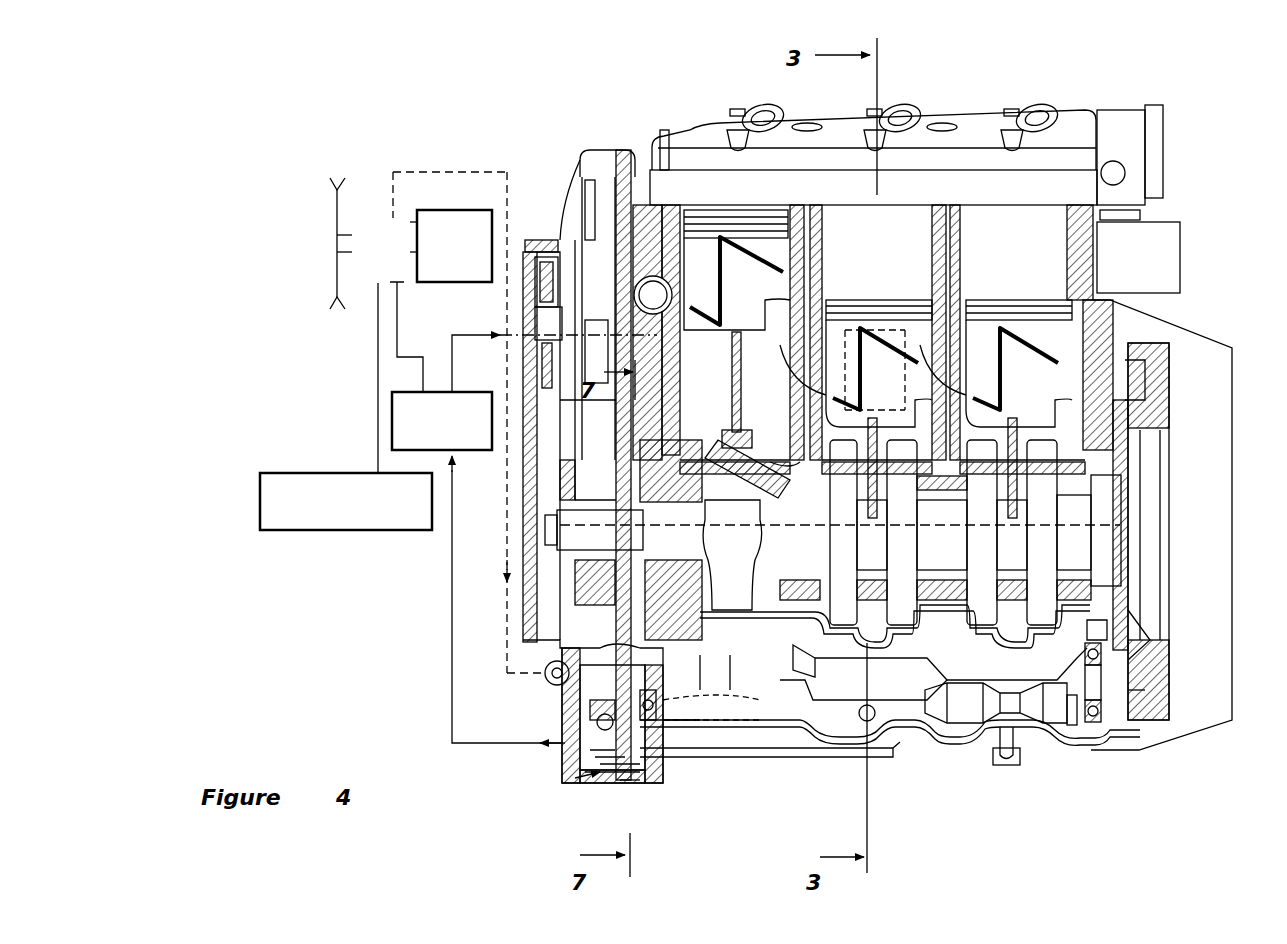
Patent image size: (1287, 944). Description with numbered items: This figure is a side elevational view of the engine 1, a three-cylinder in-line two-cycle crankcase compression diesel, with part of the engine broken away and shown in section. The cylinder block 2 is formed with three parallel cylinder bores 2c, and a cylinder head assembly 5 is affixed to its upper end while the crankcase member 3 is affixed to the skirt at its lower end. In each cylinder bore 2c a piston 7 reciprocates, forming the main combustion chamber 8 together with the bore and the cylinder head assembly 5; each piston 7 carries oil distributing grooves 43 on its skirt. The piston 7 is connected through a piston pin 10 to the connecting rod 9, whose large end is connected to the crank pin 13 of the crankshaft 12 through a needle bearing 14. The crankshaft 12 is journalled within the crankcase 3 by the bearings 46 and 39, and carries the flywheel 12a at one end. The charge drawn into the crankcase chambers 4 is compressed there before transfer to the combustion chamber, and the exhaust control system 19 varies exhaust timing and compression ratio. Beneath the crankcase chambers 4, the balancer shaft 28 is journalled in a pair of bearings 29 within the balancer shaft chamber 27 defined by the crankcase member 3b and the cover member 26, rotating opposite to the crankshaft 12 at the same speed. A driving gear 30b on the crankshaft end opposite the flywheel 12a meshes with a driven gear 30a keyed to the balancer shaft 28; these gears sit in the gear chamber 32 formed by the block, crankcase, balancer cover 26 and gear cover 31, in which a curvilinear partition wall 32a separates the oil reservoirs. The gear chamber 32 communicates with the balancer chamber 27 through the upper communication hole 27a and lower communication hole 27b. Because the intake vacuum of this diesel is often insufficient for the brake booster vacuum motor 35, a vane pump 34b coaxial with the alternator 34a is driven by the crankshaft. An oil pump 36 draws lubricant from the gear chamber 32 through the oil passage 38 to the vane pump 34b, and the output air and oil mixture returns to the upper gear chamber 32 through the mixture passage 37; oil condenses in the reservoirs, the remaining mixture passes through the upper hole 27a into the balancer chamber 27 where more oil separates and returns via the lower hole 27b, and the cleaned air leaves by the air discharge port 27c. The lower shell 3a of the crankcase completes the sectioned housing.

The engine 1 is at (1210, 152).
The cylinder block 2 is at (1130, 398).
The cylinder bore 2c is at (1097, 277).
The crankcase member 3 is at (1110, 620).
The crankcase lower shell 3a is at (975, 622).
The crankcase member 3b is at (1140, 640).
The crankcase chamber 4 is at (1015, 630).
The cylinder head assembly 5 is at (975, 120).
The piston 7 is at (766, 207).
The main combustion chamber 8 is at (876, 218).
The connecting rod 9 is at (743, 393).
The piston pin 10 is at (883, 300).
The crankshaft 12 is at (1083, 525).
The flywheel 12a is at (1148, 690).
The crank pin 13 is at (800, 462).
The needle bearing 14 is at (735, 515).
The exhaust control system 19 is at (1162, 280).
The cover member 26 is at (1035, 740).
The balancer shaft chamber 27 is at (930, 727).
The upper communication hole 27a is at (612, 628).
The lower communication hole 27b is at (690, 720).
The air discharge port 27c is at (857, 735).
The balancer shaft 28 is at (772, 662).
The bearing 29 is at (1102, 712).
The driven gear 30a is at (622, 778).
The driving gear 30b is at (641, 433).
The gear cover 31 is at (590, 762).
The gear chamber 32 is at (577, 708).
The partition wall 32a is at (590, 770).
The alternator 34a is at (483, 175).
The vane pump 34b is at (357, 200).
The brake booster vacuum motor 35 is at (362, 473).
The oil pump 36 is at (466, 392).
The mixture passage 37 is at (502, 513).
The oil passage 38 is at (450, 605).
The bearing 39 is at (790, 650).
The oil distributing groove 43 is at (840, 300).
The bearing 46 is at (653, 553).